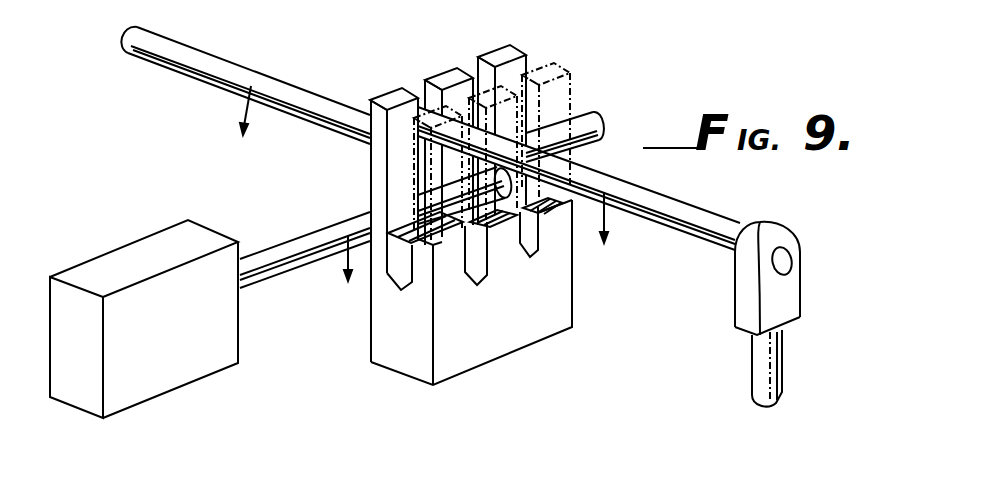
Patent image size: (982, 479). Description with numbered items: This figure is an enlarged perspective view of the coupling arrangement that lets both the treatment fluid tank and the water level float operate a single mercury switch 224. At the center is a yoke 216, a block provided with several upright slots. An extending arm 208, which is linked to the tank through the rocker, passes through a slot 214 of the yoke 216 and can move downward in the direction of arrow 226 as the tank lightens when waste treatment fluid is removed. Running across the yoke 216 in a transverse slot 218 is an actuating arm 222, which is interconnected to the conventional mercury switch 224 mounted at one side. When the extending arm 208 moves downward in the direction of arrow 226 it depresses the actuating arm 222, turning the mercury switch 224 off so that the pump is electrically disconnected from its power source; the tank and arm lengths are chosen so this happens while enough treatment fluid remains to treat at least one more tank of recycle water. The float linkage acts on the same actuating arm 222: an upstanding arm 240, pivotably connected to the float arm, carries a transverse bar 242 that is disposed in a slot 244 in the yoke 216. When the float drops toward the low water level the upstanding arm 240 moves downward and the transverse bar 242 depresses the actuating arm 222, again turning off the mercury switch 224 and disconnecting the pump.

The extending arm 208 is at (187, 43).
The slot 214 is at (418, 84).
The yoke 216 is at (473, 353).
The transverse slot 218 is at (538, 59).
The actuating arm 222 is at (303, 240).
The mercury switch 224 is at (131, 250).
The arrow 226 is at (246, 114).
The upstanding arm 240 is at (755, 372).
The transverse bar 242 is at (690, 237).
The slot 244 is at (467, 64).